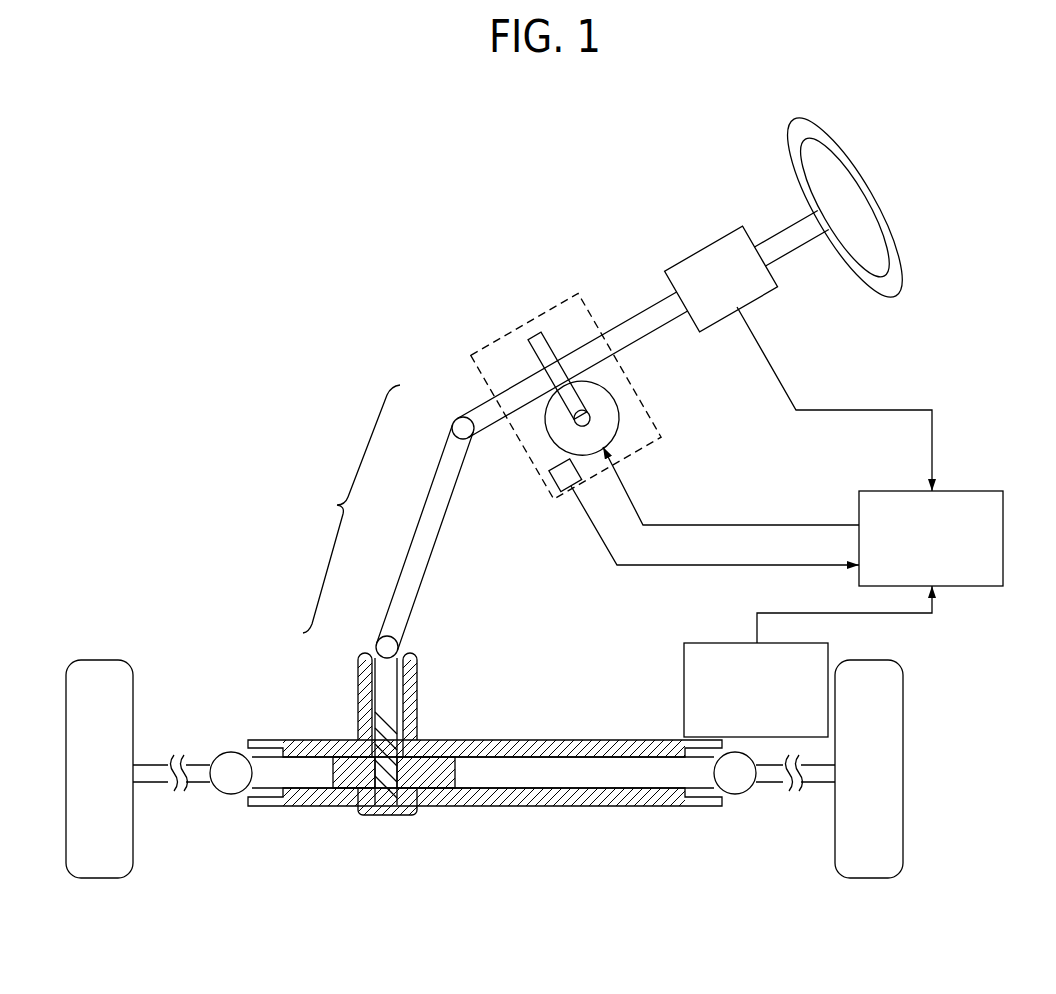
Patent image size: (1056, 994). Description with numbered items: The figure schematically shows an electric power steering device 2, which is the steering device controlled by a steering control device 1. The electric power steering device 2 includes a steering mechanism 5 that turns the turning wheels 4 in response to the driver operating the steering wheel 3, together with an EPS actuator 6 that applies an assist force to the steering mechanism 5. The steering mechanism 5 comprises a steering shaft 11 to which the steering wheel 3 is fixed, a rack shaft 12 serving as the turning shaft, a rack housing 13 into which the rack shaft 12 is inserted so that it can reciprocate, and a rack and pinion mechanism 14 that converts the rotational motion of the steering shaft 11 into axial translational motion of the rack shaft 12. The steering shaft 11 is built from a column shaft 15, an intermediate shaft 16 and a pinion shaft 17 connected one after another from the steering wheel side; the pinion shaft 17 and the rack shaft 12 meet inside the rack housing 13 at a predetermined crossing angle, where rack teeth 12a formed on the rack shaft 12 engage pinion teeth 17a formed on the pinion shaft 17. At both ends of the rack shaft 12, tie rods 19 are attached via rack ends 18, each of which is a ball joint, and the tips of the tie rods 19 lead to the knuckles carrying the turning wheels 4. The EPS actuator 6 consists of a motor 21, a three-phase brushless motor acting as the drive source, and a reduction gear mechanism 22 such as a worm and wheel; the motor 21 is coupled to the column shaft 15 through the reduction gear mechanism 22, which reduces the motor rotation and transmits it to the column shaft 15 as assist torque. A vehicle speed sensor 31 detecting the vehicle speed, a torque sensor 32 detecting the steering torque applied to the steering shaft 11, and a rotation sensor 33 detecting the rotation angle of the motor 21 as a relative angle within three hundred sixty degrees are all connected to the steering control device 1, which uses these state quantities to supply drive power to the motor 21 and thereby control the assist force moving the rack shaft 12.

The steering control device 1 is at (1005, 529).
The electric power steering device 2 is at (557, 522).
The steering wheel 3 is at (885, 206).
The turning wheels 4 is at (98, 878).
The steering mechanism 5 is at (484, 746).
The EPS actuator 6 is at (665, 406).
The steering shaft 11 is at (566, 507).
The rack shaft 12 is at (483, 778).
The rack teeth 12a is at (334, 812).
The rack housing 13 is at (537, 740).
The rack and pinion mechanism 14 is at (485, 760).
The column shaft 15 is at (452, 419).
The intermediate shaft 16 is at (412, 540).
The pinion shaft 17 is at (376, 644).
The pinion teeth 17a is at (387, 815).
The rack ends 18 is at (212, 792).
The tie rods 19 is at (147, 784).
The motor 21 is at (618, 393).
The reduction gear mechanism 22 is at (562, 433).
The vehicle speed sensor 31 is at (702, 642).
The torque sensor 32 is at (693, 253).
The rotation sensor 33 is at (547, 493).